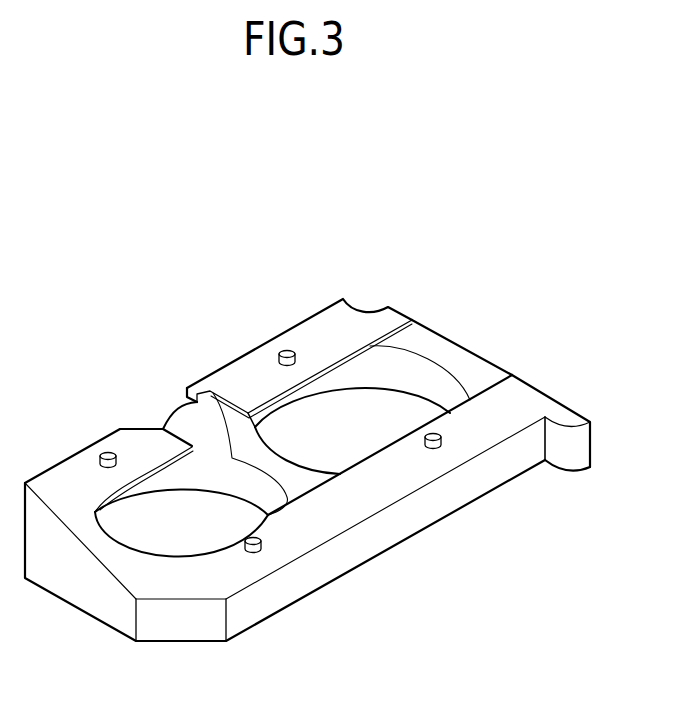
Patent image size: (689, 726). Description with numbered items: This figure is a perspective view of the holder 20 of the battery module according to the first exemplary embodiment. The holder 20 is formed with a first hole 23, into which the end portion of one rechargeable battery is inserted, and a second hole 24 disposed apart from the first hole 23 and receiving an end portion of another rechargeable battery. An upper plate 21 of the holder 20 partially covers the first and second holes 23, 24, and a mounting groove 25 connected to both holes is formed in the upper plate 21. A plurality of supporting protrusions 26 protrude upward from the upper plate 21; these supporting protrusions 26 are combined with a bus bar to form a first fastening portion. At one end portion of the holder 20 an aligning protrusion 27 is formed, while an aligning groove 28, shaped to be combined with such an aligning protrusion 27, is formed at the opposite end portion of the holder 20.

The holder 20 is at (305, 313).
The upper plate 21 is at (468, 433).
The first hole 23 is at (178, 407).
The second hole 24 is at (438, 360).
The mounting groove 25 is at (293, 470).
The supporting protrusions 26 is at (103, 453).
The aligning protrusion 27 is at (565, 458).
The aligning groove 28 is at (368, 307).